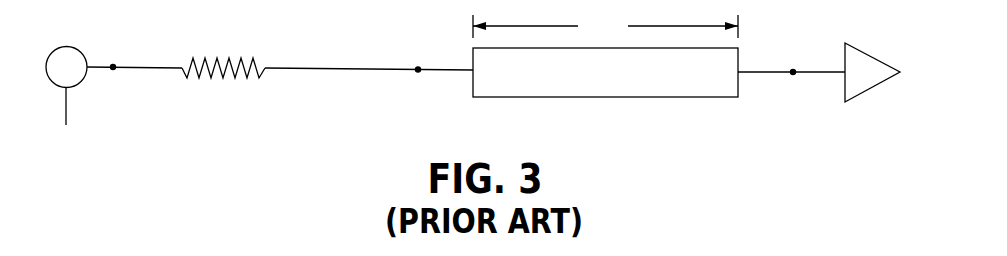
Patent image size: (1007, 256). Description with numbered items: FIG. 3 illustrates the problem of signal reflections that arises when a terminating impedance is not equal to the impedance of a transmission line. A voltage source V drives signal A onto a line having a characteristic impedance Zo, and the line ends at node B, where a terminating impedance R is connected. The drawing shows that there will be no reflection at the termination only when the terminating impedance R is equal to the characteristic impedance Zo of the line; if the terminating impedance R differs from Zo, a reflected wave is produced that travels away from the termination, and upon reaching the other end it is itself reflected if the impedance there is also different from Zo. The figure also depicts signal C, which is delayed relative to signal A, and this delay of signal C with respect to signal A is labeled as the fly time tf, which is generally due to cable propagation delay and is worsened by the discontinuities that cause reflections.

The voltage source V is at (66, 86).
The signal A is at (113, 78).
The terminating impedance R is at (223, 53).
The node B is at (418, 80).
The characteristic impedance Zo is at (605, 72).
The fly time tf is at (605, 24).
The signal C is at (793, 83).